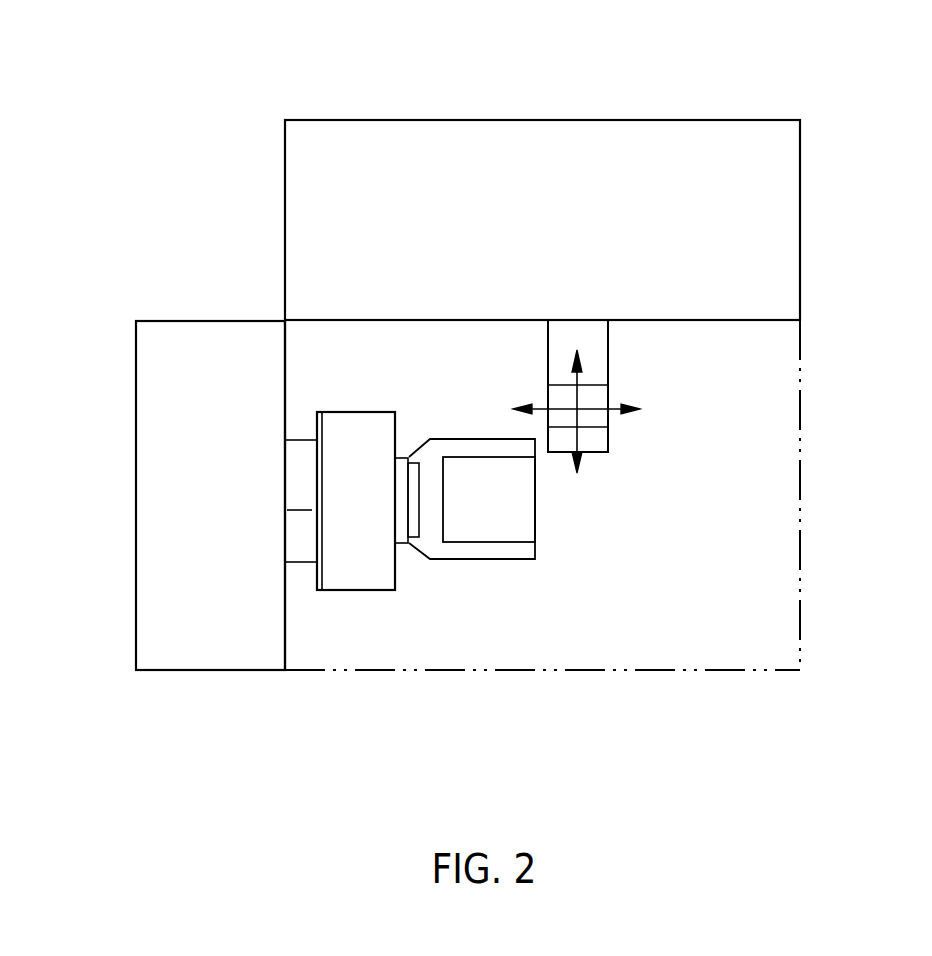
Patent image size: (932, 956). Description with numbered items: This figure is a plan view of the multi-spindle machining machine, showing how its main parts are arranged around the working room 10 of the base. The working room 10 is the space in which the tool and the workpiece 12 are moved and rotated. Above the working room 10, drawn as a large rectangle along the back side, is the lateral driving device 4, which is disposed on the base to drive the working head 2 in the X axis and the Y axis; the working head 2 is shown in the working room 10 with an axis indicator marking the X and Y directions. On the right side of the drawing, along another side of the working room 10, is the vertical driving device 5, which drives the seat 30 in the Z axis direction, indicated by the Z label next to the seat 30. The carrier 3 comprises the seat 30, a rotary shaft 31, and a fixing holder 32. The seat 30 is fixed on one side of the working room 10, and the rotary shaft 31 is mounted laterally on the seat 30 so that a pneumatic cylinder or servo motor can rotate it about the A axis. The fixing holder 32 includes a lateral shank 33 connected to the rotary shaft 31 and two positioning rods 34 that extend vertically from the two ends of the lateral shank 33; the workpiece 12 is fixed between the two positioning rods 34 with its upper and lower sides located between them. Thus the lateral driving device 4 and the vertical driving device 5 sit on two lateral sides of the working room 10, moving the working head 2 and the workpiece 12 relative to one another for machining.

The working head 2 is at (608, 440).
The carrier 3 is at (412, 625).
The lateral driving device 4 is at (695, 152).
The vertical driving device 5 is at (150, 487).
The working room 10 is at (762, 490).
The workpiece 12 is at (527, 527).
The seat 30 is at (305, 552).
The rotary shaft 31 is at (401, 462).
The fixing holder 32 is at (524, 604).
The lateral shank 33 is at (437, 502).
The positioning rods 34 is at (507, 552).